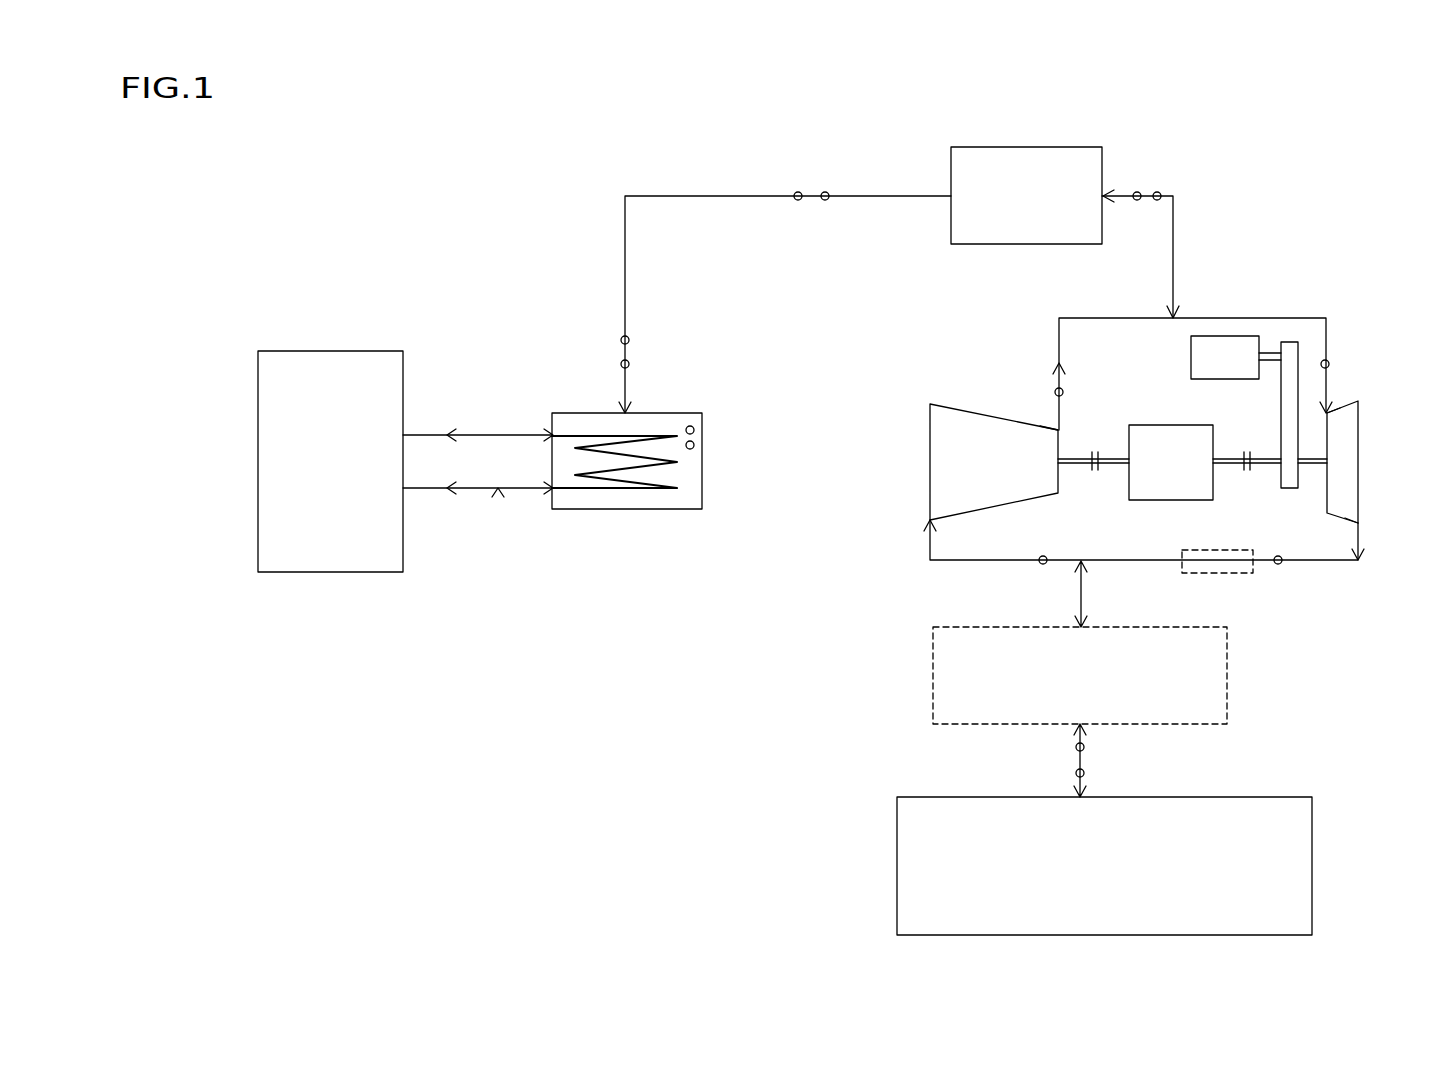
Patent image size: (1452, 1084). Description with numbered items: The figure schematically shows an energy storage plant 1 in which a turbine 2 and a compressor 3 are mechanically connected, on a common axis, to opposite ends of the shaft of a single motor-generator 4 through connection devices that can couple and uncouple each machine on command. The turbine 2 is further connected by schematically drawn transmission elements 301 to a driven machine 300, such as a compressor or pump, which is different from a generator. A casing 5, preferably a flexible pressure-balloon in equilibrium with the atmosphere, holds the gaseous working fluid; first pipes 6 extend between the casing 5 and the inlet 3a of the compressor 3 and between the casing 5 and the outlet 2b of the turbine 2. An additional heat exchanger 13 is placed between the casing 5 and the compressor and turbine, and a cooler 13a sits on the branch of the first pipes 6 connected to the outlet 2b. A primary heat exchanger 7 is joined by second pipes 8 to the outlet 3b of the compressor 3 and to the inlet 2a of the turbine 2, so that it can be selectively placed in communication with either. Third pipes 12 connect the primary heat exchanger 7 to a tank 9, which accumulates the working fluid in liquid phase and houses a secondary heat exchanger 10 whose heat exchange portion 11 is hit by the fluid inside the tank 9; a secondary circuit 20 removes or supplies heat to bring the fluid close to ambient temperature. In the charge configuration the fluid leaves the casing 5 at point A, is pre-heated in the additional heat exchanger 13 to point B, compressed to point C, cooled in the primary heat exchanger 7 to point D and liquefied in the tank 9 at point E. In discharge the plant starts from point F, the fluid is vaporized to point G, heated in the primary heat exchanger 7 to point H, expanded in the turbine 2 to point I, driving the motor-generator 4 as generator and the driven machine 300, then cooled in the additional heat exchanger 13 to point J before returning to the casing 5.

The energy storage plant 1 is at (607, 722).
The turbine 2 is at (1358, 428).
The inlet of the turbine 2a is at (1340, 390).
The outlet of the turbine 2b is at (1358, 523).
The compressor 3 is at (948, 404).
The inlet of the compressor 3a is at (928, 520).
The outlet of the compressor 3b is at (1057, 430).
The motor-generator 4 is at (1180, 424).
The casing 5 is at (1312, 842).
The first pipes 6 is at (1083, 594).
The primary heat exchanger 7 is at (1065, 147).
The second pipes 8 is at (1173, 255).
The tank 9 is at (702, 485).
The secondary heat exchanger 10 is at (452, 408).
The heat exchange portion 11 is at (643, 489).
The third pipes 12 is at (715, 196).
The additional heat exchanger 13 is at (1227, 675).
The cooler 13a is at (1253, 573).
The secondary circuit 20 is at (498, 490).
The driven machine 300 is at (1215, 357).
The transmission elements 301 is at (1292, 375).
The point A is at (1076, 747).
The point B is at (1041, 563).
The point C is at (1137, 192).
The point D is at (798, 192).
The point E is at (693, 427).
The point F is at (694, 445).
The point G is at (825, 200).
The point H is at (1157, 192).
The point I is at (1281, 563).
The point J is at (1084, 773).